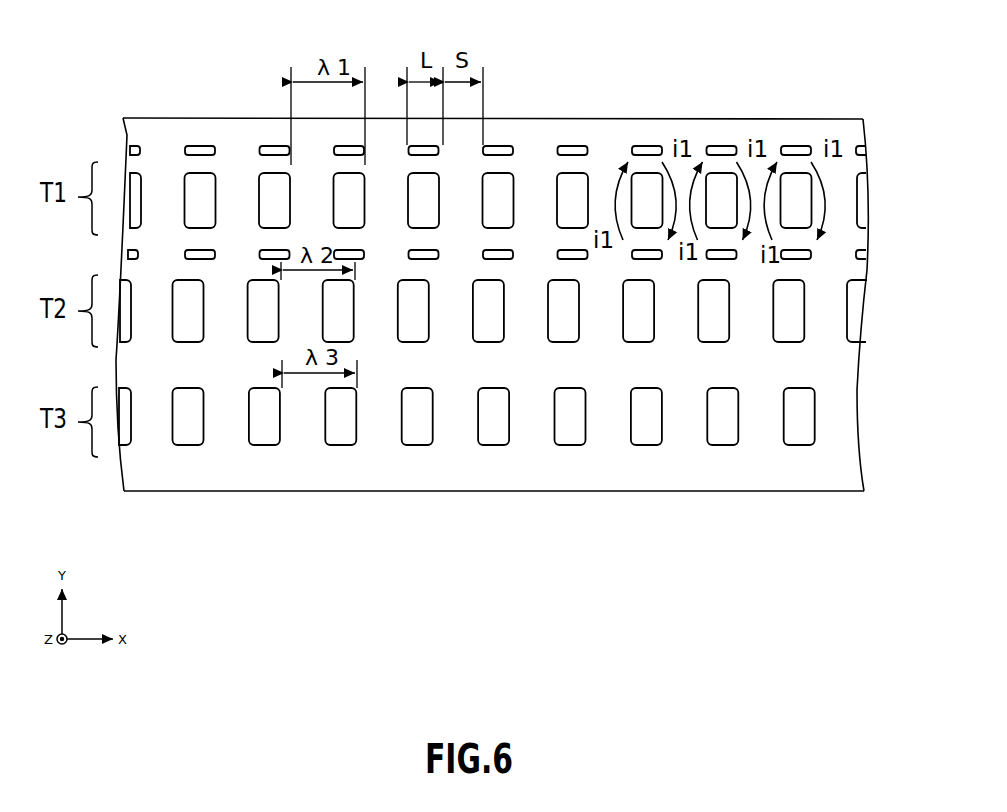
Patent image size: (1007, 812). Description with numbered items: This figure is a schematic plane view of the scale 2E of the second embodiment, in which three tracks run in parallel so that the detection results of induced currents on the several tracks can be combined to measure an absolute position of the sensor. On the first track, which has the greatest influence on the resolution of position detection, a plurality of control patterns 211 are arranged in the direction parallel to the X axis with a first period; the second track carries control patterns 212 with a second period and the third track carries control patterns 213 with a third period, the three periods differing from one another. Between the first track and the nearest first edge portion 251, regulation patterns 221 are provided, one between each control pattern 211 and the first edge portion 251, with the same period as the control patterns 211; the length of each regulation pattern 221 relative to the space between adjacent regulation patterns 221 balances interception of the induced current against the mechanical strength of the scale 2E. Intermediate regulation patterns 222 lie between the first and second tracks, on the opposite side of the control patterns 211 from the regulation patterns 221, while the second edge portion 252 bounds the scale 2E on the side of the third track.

The scale 2E is at (838, 100).
The control pattern 211 is at (193, 195).
The control pattern 212 is at (190, 325).
The control pattern 213 is at (187, 435).
The regulation pattern 221 is at (203, 145).
The regulation pattern 222 is at (205, 259).
The first edge portion 251 is at (587, 120).
The second edge 252 is at (488, 491).